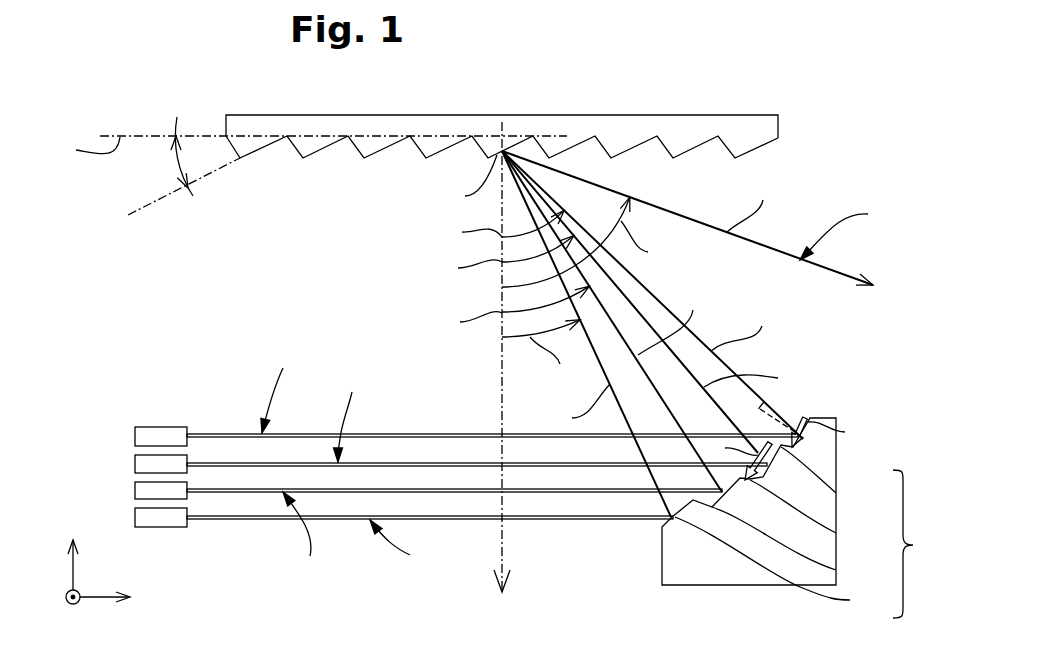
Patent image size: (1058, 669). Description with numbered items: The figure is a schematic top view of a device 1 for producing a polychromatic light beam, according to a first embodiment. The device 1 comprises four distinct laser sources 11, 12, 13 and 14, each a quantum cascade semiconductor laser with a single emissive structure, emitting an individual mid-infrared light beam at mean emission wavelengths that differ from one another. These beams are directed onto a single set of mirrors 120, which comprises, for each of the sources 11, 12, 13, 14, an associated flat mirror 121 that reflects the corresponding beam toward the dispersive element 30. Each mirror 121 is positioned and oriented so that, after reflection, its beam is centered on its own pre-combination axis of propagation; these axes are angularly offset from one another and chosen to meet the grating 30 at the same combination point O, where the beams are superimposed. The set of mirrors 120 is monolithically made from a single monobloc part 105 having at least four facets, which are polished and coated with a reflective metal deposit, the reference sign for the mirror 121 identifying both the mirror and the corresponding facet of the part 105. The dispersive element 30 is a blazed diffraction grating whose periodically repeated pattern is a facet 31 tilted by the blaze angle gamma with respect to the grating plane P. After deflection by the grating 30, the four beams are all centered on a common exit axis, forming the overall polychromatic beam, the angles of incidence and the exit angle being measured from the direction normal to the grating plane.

The device for producing a polychromatic light beam 1 is at (817, 148).
The dispersive element 30 is at (625, 130).
The facet 31 is at (257, 150).
The laser source 11 is at (155, 427).
The laser source 12 is at (135, 465).
The laser source 13 is at (135, 492).
The laser source 14 is at (168, 528).
The monolithic part 105 is at (692, 585).
The set of mirrors 120 is at (923, 544).
The mirror 121 is at (836, 493).